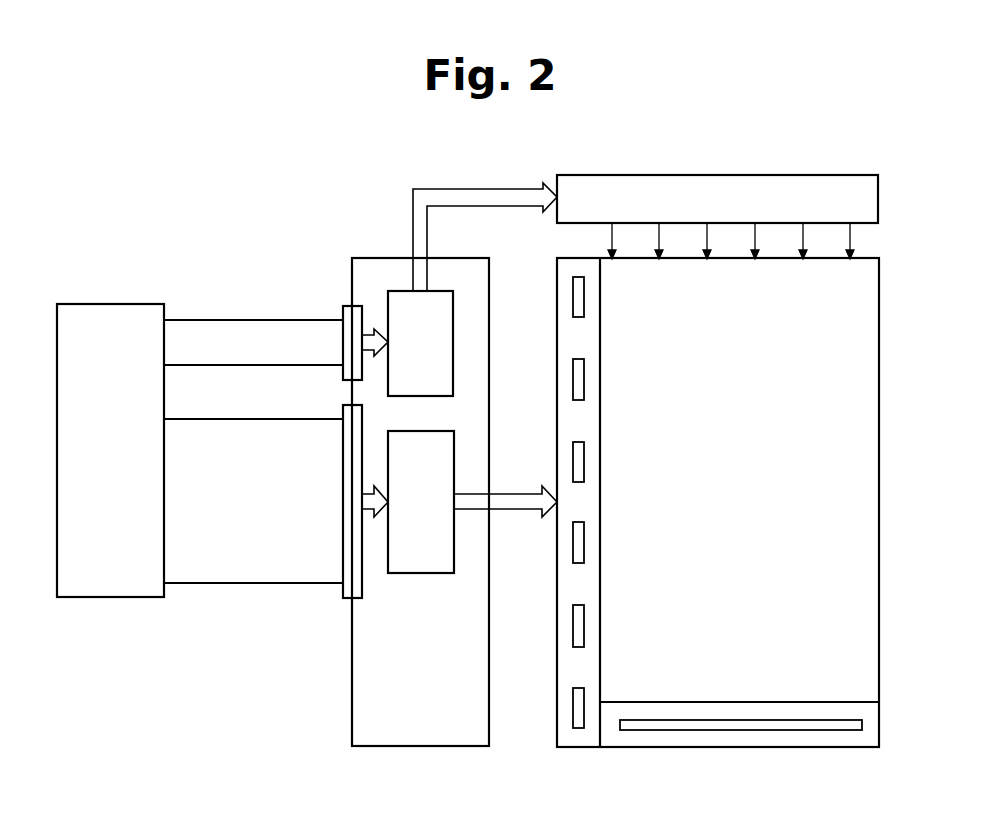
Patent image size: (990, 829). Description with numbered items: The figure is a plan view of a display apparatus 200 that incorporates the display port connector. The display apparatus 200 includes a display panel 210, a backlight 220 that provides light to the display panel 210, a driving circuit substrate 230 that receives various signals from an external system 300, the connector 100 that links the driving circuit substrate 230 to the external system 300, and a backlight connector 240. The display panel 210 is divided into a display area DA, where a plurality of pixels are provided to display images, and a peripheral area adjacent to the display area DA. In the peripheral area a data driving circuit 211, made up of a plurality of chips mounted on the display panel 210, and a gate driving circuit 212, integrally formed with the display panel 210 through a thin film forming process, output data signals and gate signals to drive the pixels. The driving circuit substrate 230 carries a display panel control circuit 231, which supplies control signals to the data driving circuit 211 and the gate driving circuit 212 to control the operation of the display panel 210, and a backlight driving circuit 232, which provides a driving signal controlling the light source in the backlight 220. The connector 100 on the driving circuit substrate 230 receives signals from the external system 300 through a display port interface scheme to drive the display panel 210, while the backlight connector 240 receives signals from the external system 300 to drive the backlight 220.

The connector 100 is at (352, 600).
The display apparatus 200 is at (833, 137).
The display panel 210 is at (762, 502).
The data driving circuit 211 is at (585, 623).
The gate driving circuit 212 is at (862, 725).
The backlight 220 is at (880, 197).
The driving circuit substrate 230 is at (454, 496).
The display panel control circuit 231 is at (454, 545).
The backlight driving circuit 232 is at (453, 342).
The backlight connector 240 is at (350, 306).
The external system 300 is at (112, 597).
The display area DA is at (862, 478).